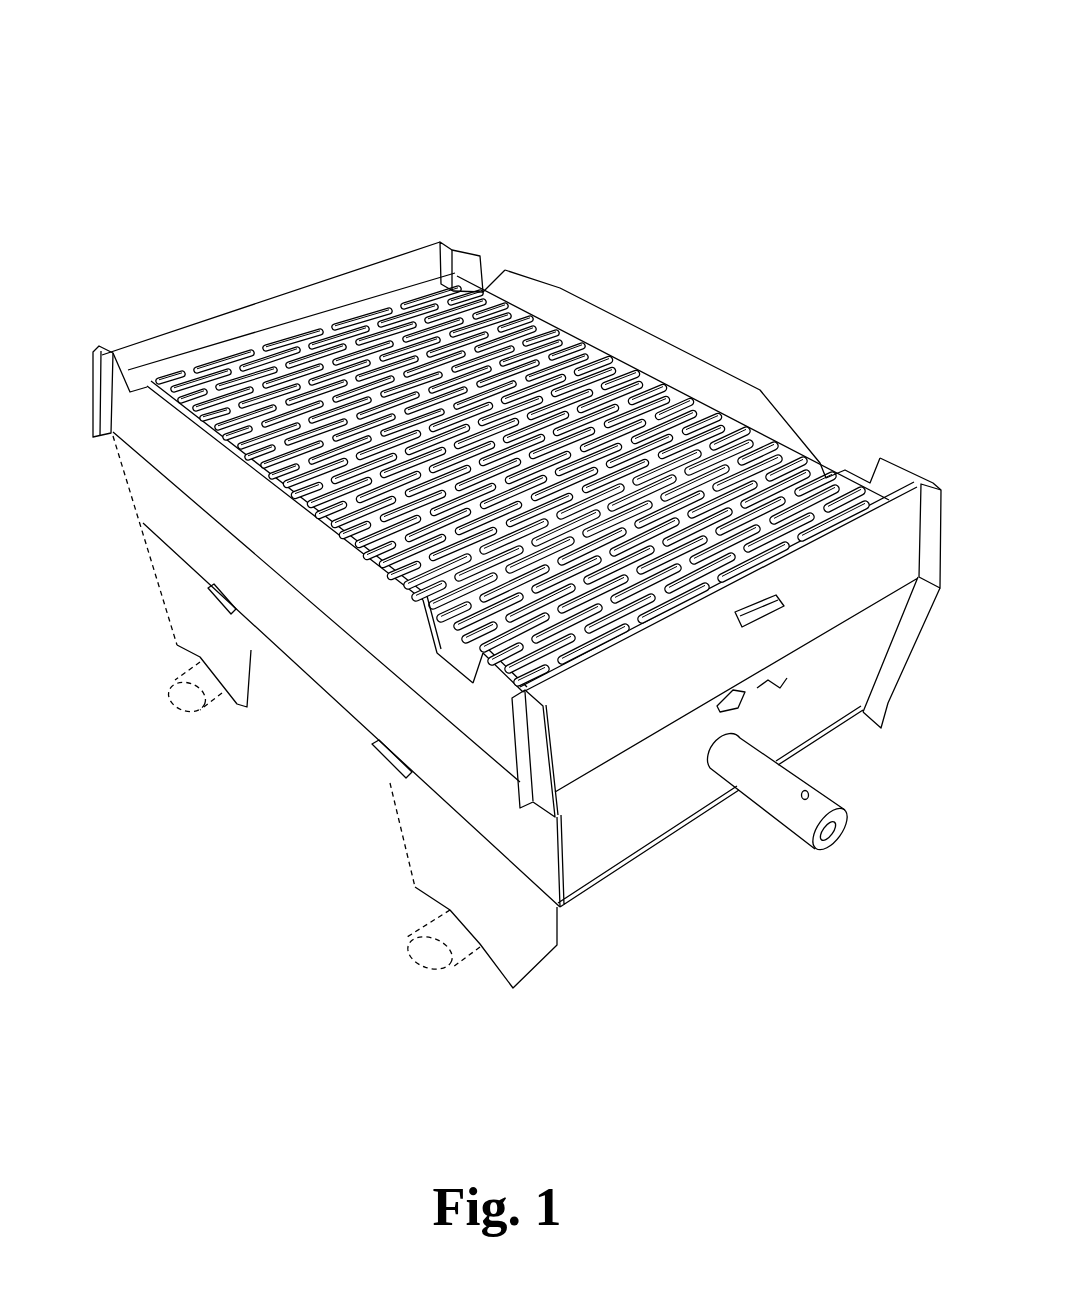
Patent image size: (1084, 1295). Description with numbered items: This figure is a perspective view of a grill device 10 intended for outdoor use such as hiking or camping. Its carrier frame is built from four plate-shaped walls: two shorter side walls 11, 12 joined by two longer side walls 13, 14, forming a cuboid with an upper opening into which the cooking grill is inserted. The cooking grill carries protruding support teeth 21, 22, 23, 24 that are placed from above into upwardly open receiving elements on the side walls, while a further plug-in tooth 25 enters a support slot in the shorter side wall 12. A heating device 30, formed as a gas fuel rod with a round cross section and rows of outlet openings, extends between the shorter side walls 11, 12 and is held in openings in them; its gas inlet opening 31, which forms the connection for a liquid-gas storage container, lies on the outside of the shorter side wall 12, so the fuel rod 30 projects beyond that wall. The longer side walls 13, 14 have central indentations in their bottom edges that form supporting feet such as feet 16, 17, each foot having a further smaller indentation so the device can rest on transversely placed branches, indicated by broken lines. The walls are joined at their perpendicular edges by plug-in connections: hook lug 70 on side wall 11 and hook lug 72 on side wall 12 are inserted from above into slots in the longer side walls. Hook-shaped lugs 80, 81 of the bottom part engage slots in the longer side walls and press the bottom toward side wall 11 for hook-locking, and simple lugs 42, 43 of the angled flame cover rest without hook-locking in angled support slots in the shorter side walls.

The grill device 10 is at (498, 551).
The shorter side wall 11 is at (357, 287).
The shorter side wall 12 is at (615, 835).
The longer side wall 13 is at (343, 692).
The longer side wall 14 is at (780, 397).
The supporting foot 16 is at (187, 622).
The supporting foot 17 is at (520, 947).
The support tooth 21 is at (122, 430).
The support tooth 22 is at (489, 288).
The support tooth 23 is at (456, 663).
The support tooth 24 is at (845, 468).
The plug-in tooth 25 is at (770, 606).
The heating device 30 is at (798, 829).
The gas inlet opening 31 is at (833, 838).
The lug 42 is at (733, 702).
The lug 43 is at (787, 678).
The hook lug 70 is at (100, 356).
The hook lug 72 is at (520, 775).
The lug 80 is at (207, 595).
The lug 81 is at (385, 772).